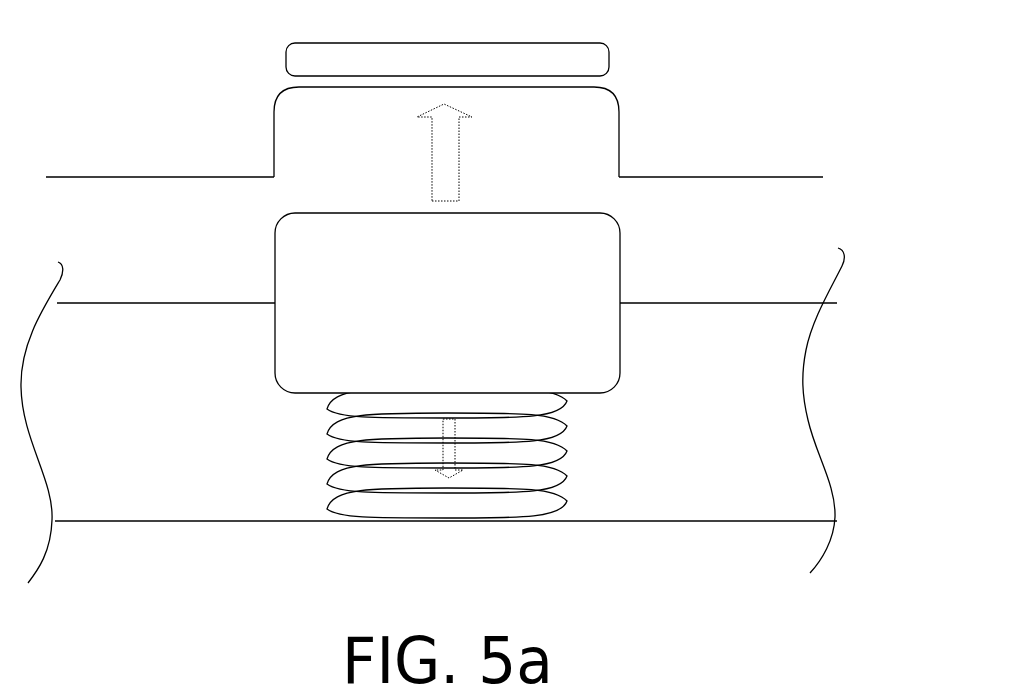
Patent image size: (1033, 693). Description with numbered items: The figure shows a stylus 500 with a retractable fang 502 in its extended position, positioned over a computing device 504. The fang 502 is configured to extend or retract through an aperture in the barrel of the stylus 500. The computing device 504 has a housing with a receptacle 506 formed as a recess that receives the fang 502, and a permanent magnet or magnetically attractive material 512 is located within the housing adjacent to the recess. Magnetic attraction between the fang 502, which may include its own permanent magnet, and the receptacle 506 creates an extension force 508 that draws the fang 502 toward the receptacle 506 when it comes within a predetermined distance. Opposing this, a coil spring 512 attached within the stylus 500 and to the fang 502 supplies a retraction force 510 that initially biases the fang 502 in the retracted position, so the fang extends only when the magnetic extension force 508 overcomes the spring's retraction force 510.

The stylus 500 is at (785, 256).
The fang 502 is at (266, 285).
The computing device 504 is at (182, 143).
The receptacle 506 is at (360, 90).
The extension force 508 is at (448, 161).
The retraction force 510 is at (450, 451).
The permanent magnet / coil spring 512 is at (592, 57).